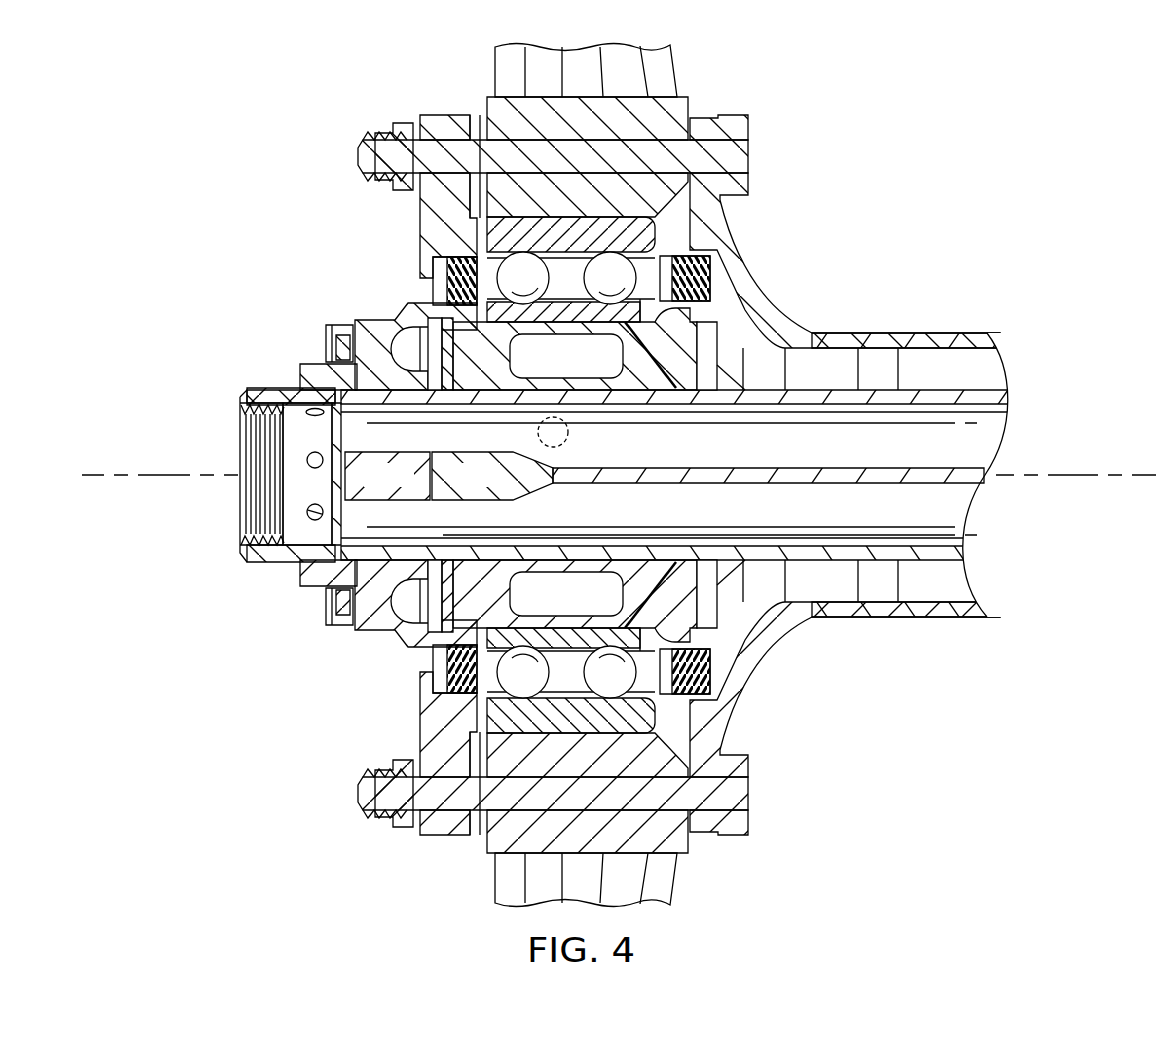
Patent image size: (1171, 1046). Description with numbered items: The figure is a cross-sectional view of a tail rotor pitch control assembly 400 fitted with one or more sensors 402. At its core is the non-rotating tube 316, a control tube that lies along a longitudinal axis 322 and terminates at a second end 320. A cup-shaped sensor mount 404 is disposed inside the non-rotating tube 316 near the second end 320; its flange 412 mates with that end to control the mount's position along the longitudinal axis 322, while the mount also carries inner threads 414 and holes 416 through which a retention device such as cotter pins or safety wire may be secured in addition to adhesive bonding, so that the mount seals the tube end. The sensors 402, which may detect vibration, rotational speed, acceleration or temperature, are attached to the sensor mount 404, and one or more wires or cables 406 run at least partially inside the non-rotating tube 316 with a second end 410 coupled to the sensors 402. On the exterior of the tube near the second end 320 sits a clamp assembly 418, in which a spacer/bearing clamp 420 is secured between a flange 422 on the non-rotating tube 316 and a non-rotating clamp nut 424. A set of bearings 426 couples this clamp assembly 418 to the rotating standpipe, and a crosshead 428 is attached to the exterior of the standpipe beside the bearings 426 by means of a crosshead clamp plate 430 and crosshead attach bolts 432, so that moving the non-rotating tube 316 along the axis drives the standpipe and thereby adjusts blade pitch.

The tail rotor pitch control assembly 400 is at (968, 200).
The non-rotating tube 316 is at (832, 345).
The second end of the non-rotating tube 320 is at (243, 566).
The longitudinal axis 322 is at (95, 474).
The sensors 402 is at (387, 476).
The sensor mount 404 is at (240, 465).
The wires or cables 406 is at (887, 480).
The second end of the wires or cables 410 is at (492, 476).
The flange 412 is at (247, 395).
The inner threads 414 is at (247, 432).
The holes 416 is at (322, 512).
The clamp assembly 418 is at (326, 302).
The spacer/bearing clamp 420 is at (653, 580).
The flange on the non-rotating tube 422 is at (705, 570).
The non-rotating clamp nut 424 is at (372, 628).
The set of bearings 426 is at (620, 268).
The crosshead 428 is at (668, 80).
The crosshead clamp plate 430 is at (425, 240).
The crosshead attach bolts 432 is at (368, 160).